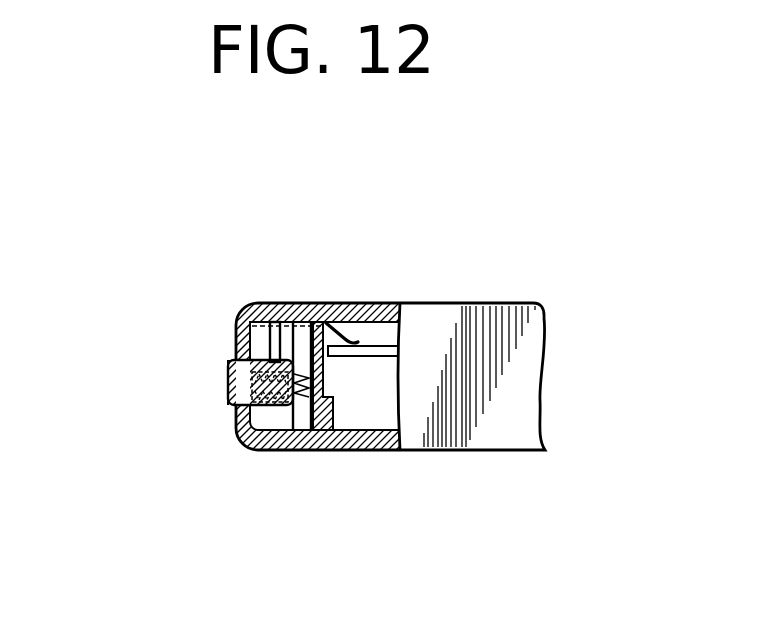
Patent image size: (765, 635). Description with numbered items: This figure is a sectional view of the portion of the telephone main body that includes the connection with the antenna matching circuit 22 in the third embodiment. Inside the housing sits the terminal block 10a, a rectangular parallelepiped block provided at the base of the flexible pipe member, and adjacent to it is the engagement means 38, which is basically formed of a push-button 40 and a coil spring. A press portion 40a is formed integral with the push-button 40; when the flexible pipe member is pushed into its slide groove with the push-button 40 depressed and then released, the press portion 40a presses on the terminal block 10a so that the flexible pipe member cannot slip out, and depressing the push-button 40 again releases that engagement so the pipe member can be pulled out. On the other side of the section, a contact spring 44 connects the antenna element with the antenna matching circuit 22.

The terminal block 10a is at (247, 316).
The engagement means 38 is at (226, 358).
The push-button 40 is at (227, 398).
The press portion 40a is at (283, 318).
The contact spring 44 is at (351, 336).
The antenna matching circuit 22 is at (397, 343).